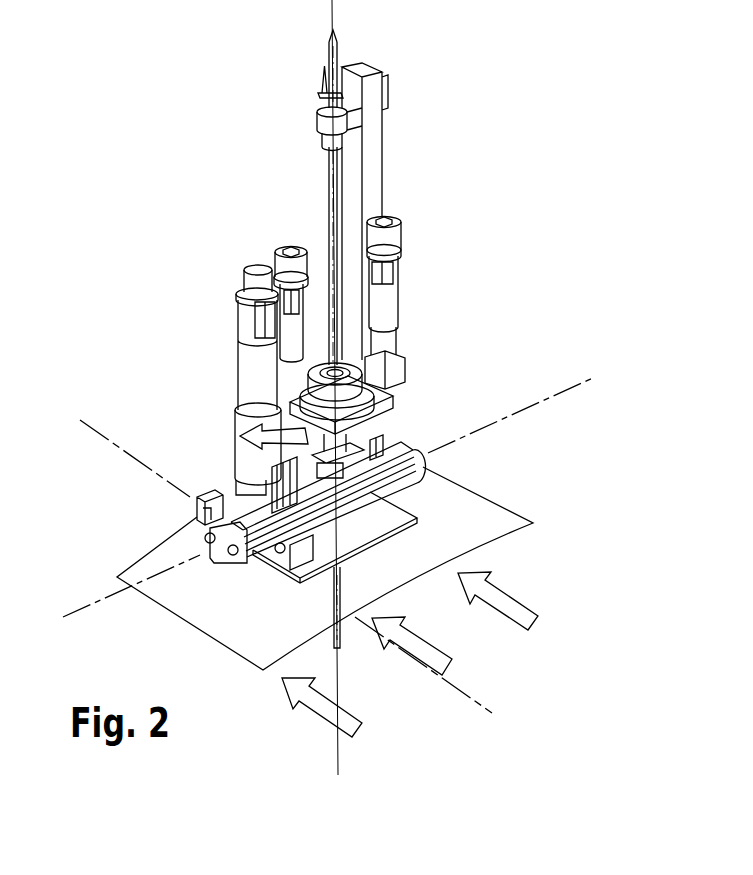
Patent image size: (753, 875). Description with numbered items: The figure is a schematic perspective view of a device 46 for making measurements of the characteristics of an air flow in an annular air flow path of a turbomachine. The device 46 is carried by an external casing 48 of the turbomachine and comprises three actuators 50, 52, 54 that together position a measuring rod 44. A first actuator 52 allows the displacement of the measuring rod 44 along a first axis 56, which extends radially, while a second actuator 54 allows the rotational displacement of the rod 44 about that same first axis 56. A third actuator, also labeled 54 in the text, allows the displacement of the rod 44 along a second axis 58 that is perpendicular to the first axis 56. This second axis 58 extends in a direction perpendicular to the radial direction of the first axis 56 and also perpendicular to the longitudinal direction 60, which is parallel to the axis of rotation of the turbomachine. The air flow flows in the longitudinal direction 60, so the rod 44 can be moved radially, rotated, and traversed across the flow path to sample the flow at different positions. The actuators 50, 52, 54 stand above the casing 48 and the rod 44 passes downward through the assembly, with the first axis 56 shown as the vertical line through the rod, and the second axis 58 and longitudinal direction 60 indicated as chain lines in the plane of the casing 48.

The measuring rod 44 is at (342, 628).
The device 46 is at (222, 192).
The external casing 48 is at (497, 517).
The actuator 50 is at (405, 298).
The first actuator 52 is at (283, 238).
The second actuator 54 is at (243, 258).
The first axis 56 is at (333, 3).
The second axis 58 is at (563, 390).
The longitudinal direction 60 is at (463, 693).